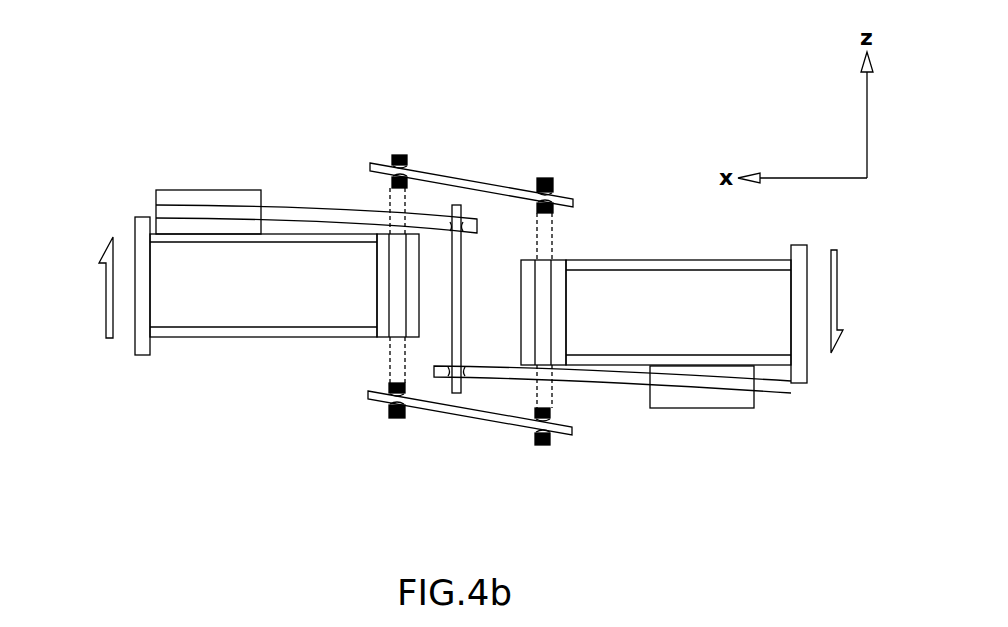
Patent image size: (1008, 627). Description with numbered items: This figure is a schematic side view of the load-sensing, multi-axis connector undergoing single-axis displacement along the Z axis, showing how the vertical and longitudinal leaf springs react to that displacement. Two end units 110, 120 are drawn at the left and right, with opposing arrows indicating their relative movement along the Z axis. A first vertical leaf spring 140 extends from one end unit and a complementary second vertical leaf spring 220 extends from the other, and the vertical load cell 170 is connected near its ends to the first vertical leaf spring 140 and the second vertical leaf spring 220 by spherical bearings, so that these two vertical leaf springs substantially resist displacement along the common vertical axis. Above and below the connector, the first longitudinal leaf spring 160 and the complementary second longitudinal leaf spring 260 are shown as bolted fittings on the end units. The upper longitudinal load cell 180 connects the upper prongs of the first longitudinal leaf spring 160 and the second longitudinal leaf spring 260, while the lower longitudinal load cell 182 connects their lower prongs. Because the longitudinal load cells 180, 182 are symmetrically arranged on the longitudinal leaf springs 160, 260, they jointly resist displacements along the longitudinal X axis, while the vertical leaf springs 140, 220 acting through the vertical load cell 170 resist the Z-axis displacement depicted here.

The first body 110 is at (132, 342).
The second body 120 is at (807, 366).
The first vertical leaf spring 140 is at (310, 203).
The second vertical leaf spring 220 is at (592, 393).
The first longitudinal leaf spring 160 is at (391, 155).
The second longitudinal leaf spring 260 is at (550, 178).
The vertical load cell 170 is at (440, 338).
The upper longitudinal load cell 180 is at (485, 180).
The lower longitudinal load cell 182 is at (472, 428).